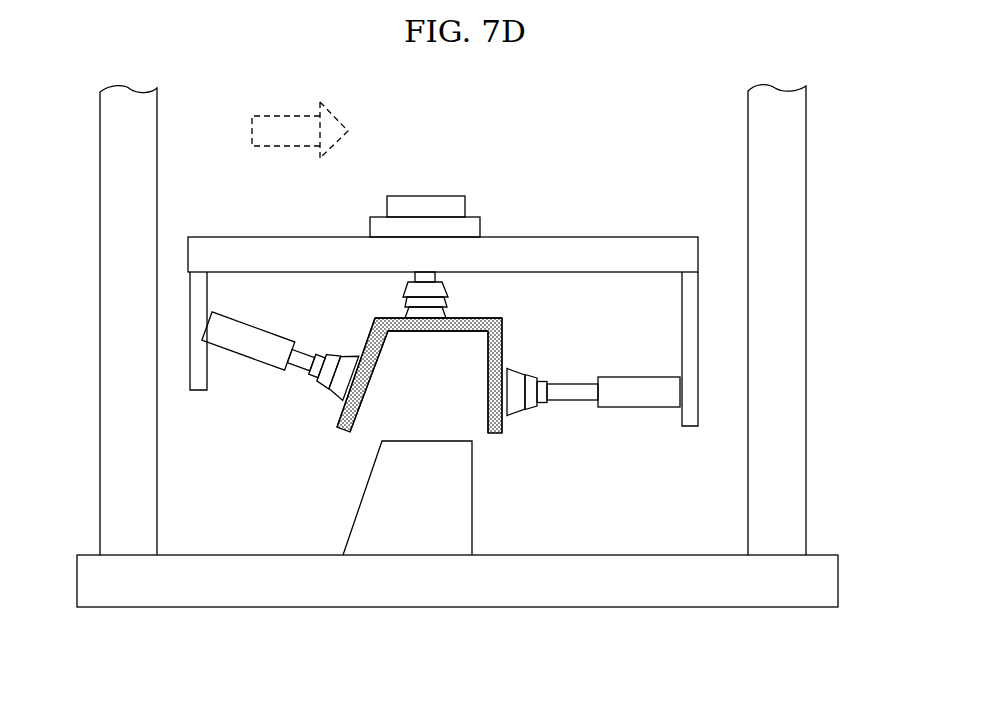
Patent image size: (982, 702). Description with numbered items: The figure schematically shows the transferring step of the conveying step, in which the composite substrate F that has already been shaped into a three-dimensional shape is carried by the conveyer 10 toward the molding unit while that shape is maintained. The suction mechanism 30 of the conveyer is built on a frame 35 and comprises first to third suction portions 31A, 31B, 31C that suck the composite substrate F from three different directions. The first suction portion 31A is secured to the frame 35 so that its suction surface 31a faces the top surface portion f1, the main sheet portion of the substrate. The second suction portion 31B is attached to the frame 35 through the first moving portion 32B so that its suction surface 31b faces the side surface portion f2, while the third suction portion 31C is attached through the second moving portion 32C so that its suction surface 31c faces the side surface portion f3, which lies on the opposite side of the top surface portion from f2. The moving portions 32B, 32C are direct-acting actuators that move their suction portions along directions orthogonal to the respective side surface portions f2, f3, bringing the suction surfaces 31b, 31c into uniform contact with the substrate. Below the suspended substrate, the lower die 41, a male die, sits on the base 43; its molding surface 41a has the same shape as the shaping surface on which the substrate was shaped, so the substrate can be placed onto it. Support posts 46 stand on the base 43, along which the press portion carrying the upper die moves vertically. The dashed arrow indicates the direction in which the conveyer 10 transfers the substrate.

The conveyer 10 is at (682, 202).
The suction mechanism 30 is at (443, 320).
The frame 35 is at (308, 255).
The first suction portion 31A is at (444, 299).
The second suction portion 31B is at (354, 360).
The third suction portion 31C is at (527, 398).
The first moving portion 32B is at (247, 347).
The second moving portion 32C is at (612, 387).
The suction surface 31a is at (425, 318).
The suction surface 31b is at (377, 366).
The suction surface 31c is at (489, 403).
The composite substrate F is at (430, 367).
The top surface portion f1 is at (483, 318).
The side surface portion f2 is at (339, 414).
The side surface portion f3 is at (503, 354).
The lower die 41 is at (442, 543).
The molding surface 41a is at (473, 505).
The base 43 is at (612, 570).
The support posts 46 is at (145, 468).